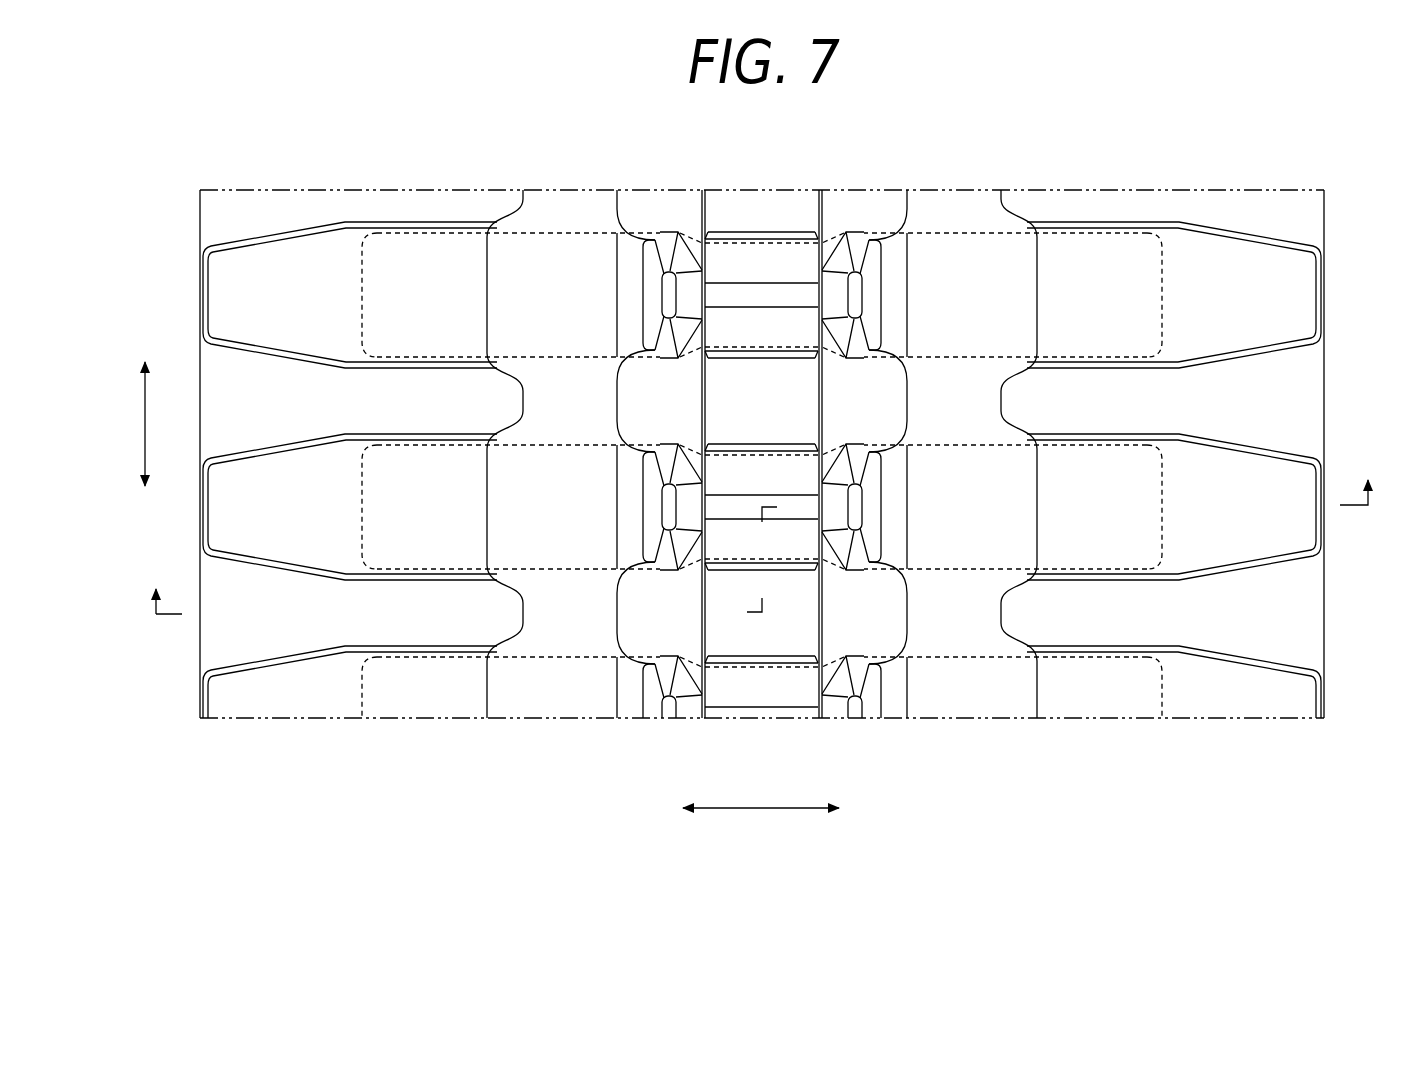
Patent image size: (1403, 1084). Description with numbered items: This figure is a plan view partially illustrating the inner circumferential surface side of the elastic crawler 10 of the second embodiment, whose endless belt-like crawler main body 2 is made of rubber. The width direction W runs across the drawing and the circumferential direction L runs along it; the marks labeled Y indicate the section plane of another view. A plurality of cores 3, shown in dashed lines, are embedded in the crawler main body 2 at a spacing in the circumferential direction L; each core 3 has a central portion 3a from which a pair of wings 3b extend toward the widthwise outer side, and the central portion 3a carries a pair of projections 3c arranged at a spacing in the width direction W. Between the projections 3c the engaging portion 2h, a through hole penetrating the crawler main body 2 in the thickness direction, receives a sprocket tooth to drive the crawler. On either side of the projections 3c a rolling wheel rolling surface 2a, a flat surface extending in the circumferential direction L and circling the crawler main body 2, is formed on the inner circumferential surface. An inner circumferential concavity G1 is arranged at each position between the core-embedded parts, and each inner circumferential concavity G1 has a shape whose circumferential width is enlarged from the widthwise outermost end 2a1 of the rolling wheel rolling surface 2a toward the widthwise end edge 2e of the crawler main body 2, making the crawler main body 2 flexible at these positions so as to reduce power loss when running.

The elastic crawler 10 is at (282, 148).
The crawler main body 2 is at (1272, 205).
The widthwise end edge 2e is at (200, 220).
The rolling wheel rolling surface 2a is at (551, 210).
The widthwise outermost end of the rolling wheel rolling surface 2a1 is at (1037, 290).
The engaging portion 2h is at (757, 212).
The core 3 is at (582, 230).
The central portion 3a is at (772, 325).
The wing 3b is at (362, 290).
The projection 3c is at (655, 296).
The inner circumferential concavity G1 is at (1350, 620).
The circumferential direction L is at (135, 424).
The width direction W is at (761, 825).
The section line Y is at (762, 530).